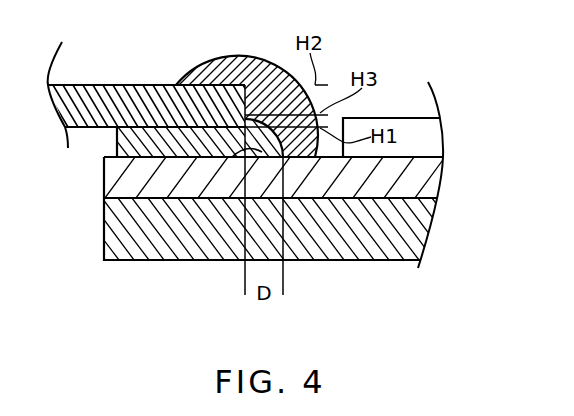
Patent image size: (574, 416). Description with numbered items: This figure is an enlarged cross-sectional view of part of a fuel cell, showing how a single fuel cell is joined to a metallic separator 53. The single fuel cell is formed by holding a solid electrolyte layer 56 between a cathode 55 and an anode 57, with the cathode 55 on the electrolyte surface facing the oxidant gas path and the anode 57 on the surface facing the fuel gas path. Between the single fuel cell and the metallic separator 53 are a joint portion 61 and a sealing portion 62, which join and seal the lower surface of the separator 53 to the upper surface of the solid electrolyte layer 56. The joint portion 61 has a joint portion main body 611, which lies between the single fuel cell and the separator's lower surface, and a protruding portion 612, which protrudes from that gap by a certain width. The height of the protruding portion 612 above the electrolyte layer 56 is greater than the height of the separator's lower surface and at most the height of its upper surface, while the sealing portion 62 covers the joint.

The metallic separator 53 is at (115, 85).
The cathode 55 is at (430, 137).
The solid electrolyte layer 56 is at (430, 177).
The anode 57 is at (420, 224).
The joint portion 61 is at (188, 226).
The joint portion main body 611 is at (199, 150).
The protruding portion 612 is at (230, 152).
The sealing portion 62 is at (203, 62).